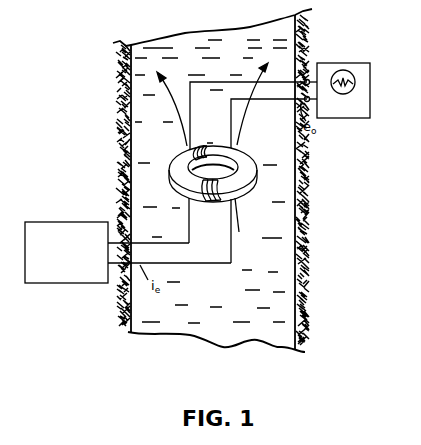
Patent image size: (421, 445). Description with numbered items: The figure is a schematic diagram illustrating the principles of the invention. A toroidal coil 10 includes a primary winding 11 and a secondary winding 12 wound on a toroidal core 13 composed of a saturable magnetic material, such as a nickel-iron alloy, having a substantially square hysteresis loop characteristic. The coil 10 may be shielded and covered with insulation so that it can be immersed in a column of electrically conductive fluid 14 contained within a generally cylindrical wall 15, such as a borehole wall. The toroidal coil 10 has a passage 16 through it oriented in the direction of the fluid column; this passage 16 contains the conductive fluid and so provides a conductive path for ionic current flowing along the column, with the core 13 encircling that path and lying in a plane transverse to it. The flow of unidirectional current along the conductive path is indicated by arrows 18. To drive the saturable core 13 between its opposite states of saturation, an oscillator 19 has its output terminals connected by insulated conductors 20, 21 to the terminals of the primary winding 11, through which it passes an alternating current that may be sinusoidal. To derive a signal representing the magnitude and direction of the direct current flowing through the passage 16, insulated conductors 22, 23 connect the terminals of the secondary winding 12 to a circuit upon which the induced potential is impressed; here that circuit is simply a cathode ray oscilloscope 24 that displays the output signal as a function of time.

The toroidal coil 10 is at (253, 189).
The primary winding 11 is at (232, 256).
The secondary winding 12 is at (190, 123).
The toroidal core 13 is at (178, 163).
The electrically conductive fluid 14 is at (239, 52).
The generally cylindrical wall 15 is at (297, 43).
The passage 16 is at (216, 172).
The arrows 18 is at (258, 84).
The oscillator 19 is at (45, 283).
The insulated conductor 20 is at (186, 227).
The insulated conductor 21 is at (217, 265).
The insulated conductor 22 is at (272, 81).
The insulated conductor 23 is at (255, 101).
The cathode ray oscilloscope 24 is at (370, 83).